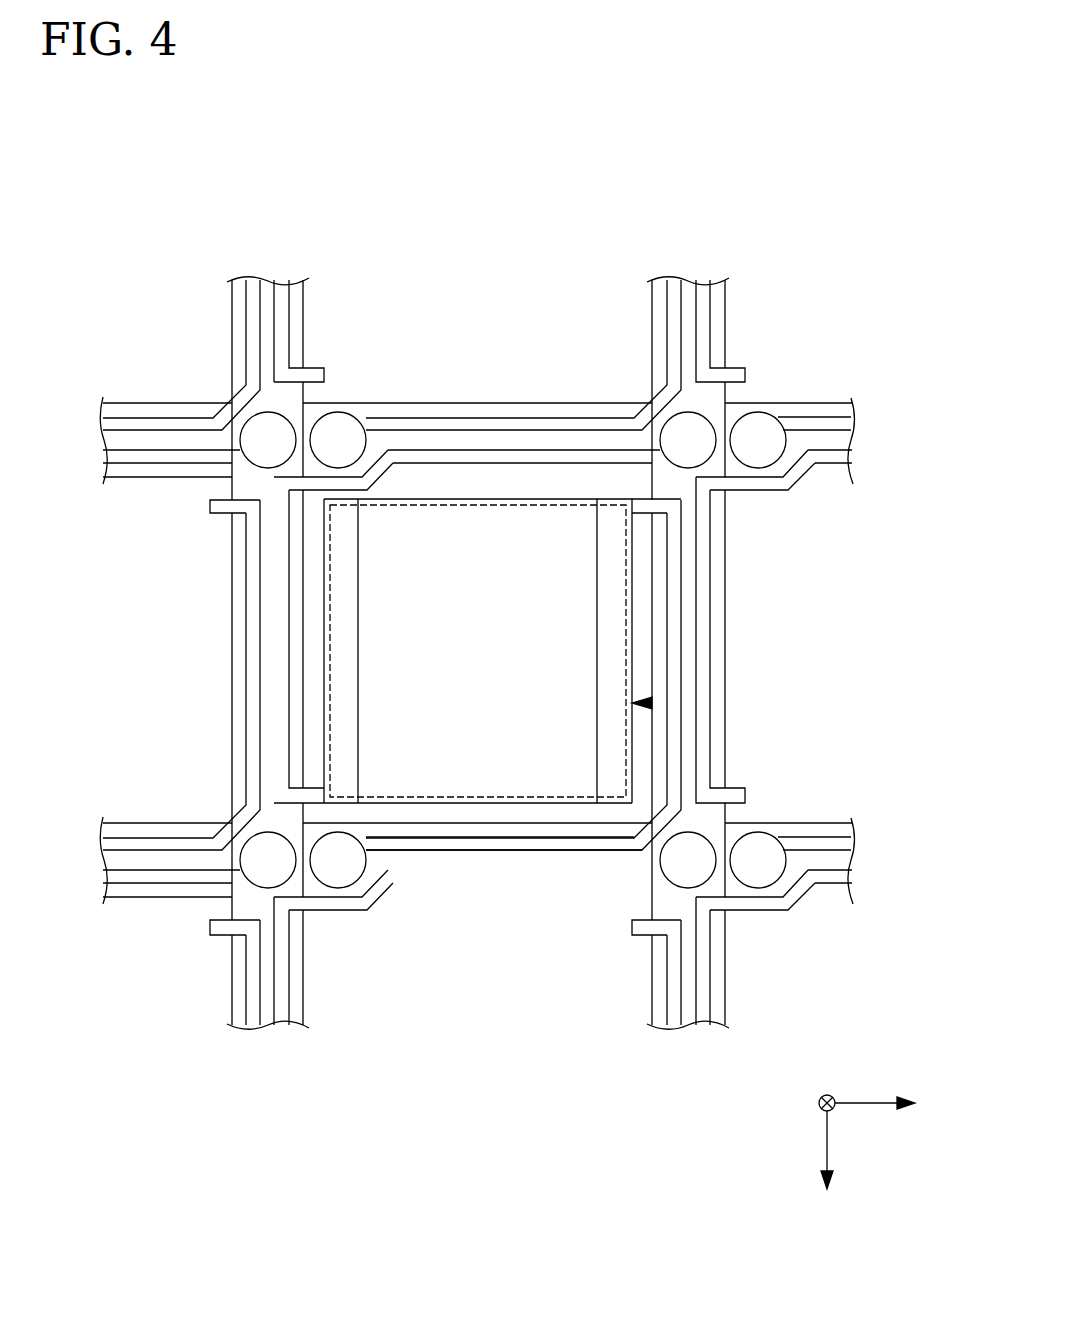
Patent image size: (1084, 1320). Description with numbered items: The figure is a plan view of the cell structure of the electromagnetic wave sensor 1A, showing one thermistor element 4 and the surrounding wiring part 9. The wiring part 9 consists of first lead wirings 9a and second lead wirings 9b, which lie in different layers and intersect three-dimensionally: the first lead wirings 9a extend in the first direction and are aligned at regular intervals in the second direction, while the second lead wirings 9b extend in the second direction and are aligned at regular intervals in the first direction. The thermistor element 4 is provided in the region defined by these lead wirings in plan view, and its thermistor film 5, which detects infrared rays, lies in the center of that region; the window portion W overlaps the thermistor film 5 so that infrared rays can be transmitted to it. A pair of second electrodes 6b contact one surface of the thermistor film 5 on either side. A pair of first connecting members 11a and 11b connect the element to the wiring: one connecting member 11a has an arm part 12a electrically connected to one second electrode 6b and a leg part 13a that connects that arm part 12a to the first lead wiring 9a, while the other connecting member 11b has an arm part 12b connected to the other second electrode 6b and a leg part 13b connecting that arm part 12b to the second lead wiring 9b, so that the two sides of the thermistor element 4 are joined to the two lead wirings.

The electromagnetic wave sensor 1A is at (110, 135).
The wiring part 9 is at (531, 613).
The first lead wiring 9a is at (690, 276).
The second lead wiring 9b is at (843, 861).
The first connecting member 11a is at (476, 921).
The first connecting member 11b is at (633, 388).
The arm part 12a is at (485, 840).
The arm part 12b is at (462, 455).
The leg part 13a is at (692, 438).
The leg part 13b is at (338, 872).
The second electrode 6b is at (340, 650).
The thermistor film 5 is at (565, 650).
The thermistor element 4 is at (652, 703).
The window portion W is at (498, 503).